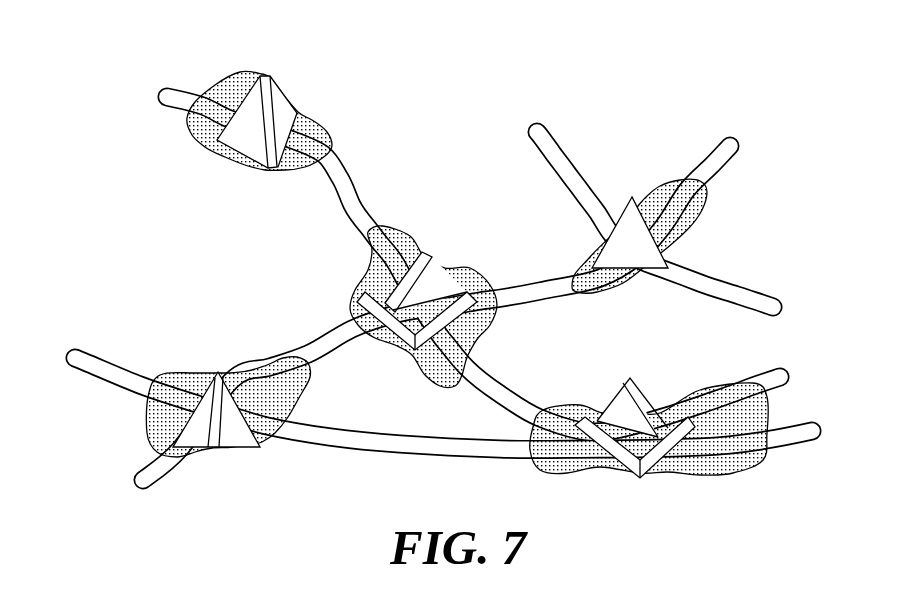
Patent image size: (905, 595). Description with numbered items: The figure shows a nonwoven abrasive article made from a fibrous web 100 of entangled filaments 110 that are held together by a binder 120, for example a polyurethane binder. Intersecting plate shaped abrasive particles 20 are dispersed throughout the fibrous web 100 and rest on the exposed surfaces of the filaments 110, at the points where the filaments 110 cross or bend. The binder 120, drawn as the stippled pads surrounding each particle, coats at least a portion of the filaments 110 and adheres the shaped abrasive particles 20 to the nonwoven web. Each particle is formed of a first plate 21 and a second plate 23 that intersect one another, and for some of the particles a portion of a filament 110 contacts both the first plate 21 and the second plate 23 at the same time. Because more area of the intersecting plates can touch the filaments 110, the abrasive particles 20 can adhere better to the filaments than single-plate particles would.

The fibrous web 100 is at (443, 257).
The filaments 110 is at (350, 194).
The binder 120 is at (366, 248).
The intersecting plate shaped abrasive particles 20 is at (434, 277).
The first plate 21 is at (353, 301).
The second plate 23 is at (435, 282).